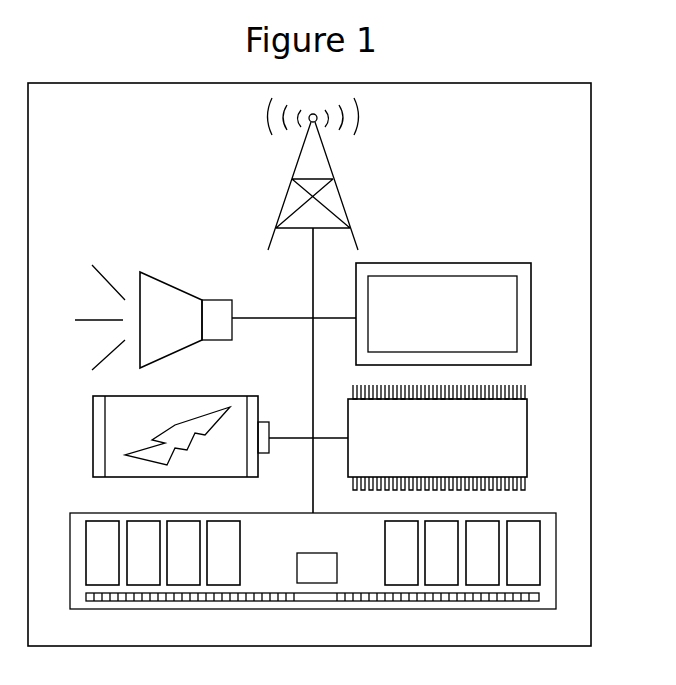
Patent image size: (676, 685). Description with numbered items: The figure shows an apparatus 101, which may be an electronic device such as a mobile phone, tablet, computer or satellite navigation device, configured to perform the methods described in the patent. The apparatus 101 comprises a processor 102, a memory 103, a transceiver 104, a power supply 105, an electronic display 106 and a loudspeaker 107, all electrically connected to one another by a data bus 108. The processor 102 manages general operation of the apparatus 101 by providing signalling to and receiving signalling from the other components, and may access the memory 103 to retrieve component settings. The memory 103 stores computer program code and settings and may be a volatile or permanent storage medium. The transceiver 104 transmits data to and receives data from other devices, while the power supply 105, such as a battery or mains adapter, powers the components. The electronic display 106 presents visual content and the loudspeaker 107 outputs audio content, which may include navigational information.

The apparatus 101 is at (309, 364).
The processor 102 is at (437, 437).
The memory 103 is at (317, 551).
The transceiver 104 is at (290, 192).
The power supply 105 is at (181, 436).
The electronic display 106 is at (443, 314).
The loudspeaker 107 is at (153, 317).
The data bus 108 is at (312, 270).